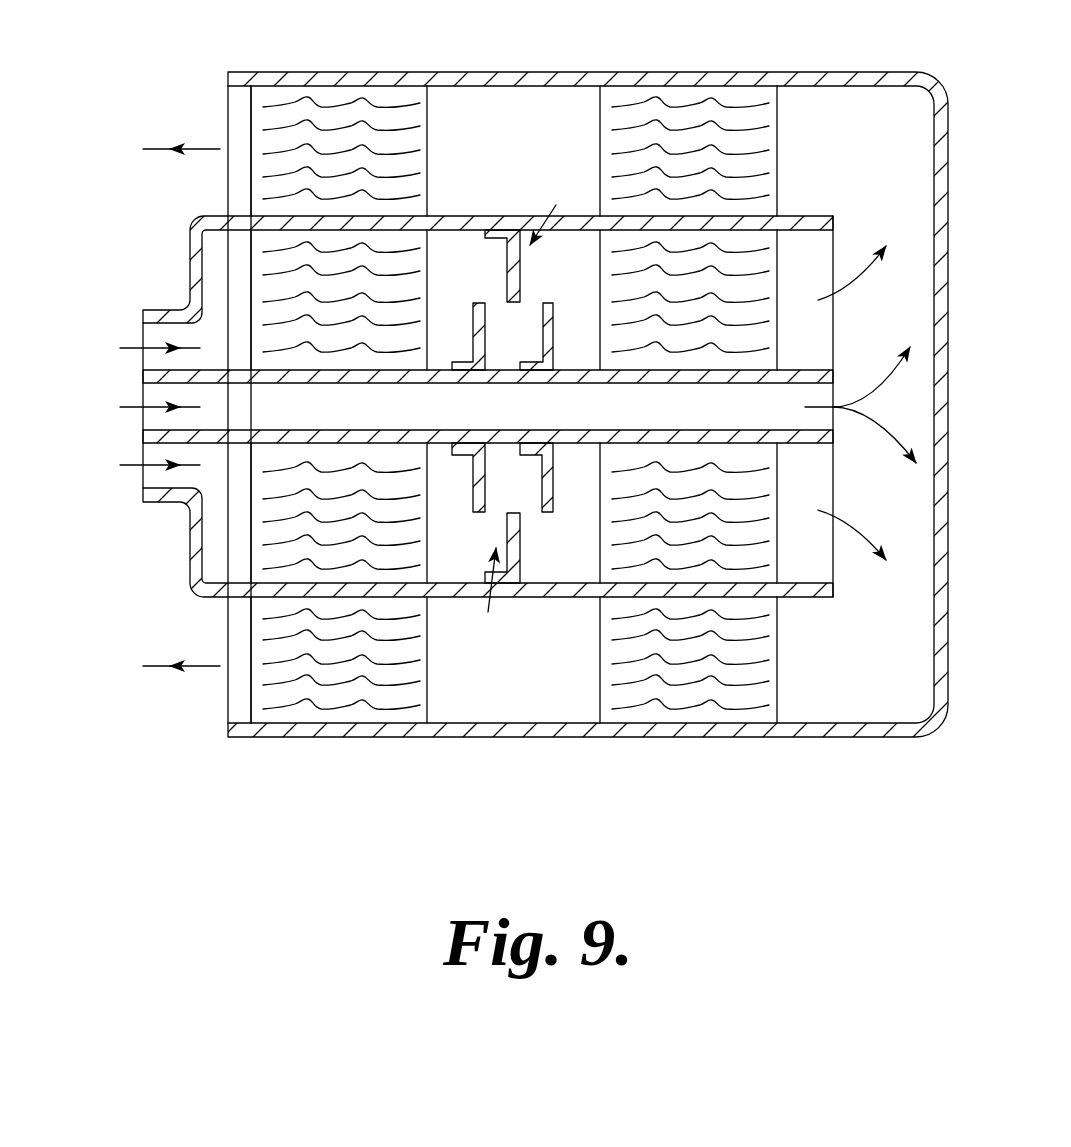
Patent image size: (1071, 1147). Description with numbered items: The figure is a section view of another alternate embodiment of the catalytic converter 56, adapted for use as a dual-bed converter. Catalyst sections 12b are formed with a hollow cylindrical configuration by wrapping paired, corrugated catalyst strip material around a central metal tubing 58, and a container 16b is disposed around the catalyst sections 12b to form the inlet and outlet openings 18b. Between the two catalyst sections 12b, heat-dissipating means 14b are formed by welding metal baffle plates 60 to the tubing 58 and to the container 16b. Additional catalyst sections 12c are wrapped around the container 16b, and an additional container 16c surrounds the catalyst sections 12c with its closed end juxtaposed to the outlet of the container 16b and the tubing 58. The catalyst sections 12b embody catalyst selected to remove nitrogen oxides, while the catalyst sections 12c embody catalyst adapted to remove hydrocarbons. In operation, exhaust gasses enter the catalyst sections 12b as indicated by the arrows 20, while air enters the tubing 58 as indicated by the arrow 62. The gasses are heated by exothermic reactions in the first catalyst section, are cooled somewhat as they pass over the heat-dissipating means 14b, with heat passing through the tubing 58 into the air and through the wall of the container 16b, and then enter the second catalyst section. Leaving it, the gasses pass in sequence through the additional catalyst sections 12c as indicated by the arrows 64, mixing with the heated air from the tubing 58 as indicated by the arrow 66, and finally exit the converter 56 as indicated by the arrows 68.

The catalytic converter 56 is at (588, 368).
The additional container 16c is at (239, 80).
The container 16b is at (195, 270).
The metal tubing 58 is at (262, 384).
The inlet and outlet openings 18b is at (153, 335).
The additional catalyst sections 12c is at (425, 168).
The catalyst sections 12b is at (427, 277).
The metal baffle plates 60 is at (520, 277).
The heat-dissipating means 14b is at (556, 205).
The arrows 68 is at (202, 148).
The arrows 20 is at (128, 348).
The arrow 62 is at (128, 407).
The arrows 64 is at (867, 280).
The arrow 66 is at (872, 405).